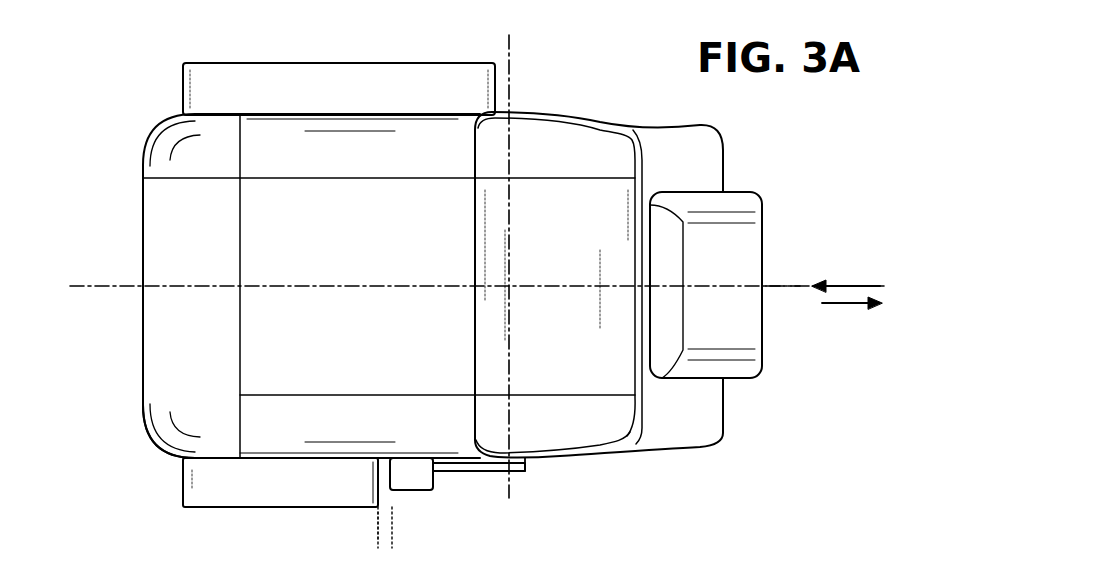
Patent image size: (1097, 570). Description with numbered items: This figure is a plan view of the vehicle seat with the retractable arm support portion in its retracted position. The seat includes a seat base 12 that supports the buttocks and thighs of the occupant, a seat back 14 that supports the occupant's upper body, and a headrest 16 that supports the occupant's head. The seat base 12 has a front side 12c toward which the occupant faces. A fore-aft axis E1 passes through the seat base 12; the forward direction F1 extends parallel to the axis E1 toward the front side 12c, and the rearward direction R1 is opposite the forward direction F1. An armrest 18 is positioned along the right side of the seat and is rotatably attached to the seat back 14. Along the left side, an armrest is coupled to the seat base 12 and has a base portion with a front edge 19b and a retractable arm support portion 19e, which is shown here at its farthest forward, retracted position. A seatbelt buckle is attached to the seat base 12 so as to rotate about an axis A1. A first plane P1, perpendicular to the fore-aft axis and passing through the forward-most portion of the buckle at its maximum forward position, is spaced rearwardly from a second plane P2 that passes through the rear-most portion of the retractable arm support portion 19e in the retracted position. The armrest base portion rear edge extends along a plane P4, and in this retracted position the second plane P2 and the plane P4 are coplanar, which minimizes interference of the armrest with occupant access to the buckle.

The seat base 12 is at (272, 148).
The front side 12c is at (143, 218).
The seat back 14 is at (660, 125).
The headrest 16 is at (753, 192).
The armrest 18 is at (280, 63).
The front edge 19b is at (183, 488).
The retractable arm support portion 19e is at (258, 488).
The axis A1 is at (512, 47).
The fore-aft axis E1 is at (778, 286).
The forward direction F1 is at (838, 284).
The rearward direction R1 is at (848, 305).
The first plane P1 is at (392, 525).
The second plane P2 is at (378, 525).
The plane P4 is at (378, 525).